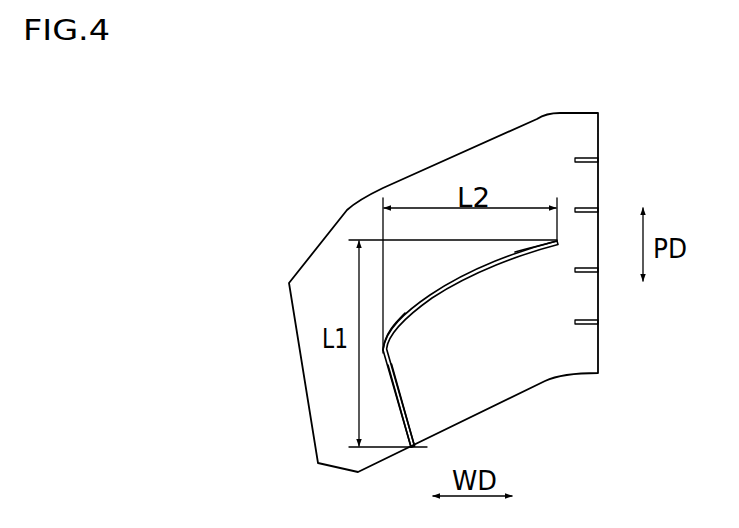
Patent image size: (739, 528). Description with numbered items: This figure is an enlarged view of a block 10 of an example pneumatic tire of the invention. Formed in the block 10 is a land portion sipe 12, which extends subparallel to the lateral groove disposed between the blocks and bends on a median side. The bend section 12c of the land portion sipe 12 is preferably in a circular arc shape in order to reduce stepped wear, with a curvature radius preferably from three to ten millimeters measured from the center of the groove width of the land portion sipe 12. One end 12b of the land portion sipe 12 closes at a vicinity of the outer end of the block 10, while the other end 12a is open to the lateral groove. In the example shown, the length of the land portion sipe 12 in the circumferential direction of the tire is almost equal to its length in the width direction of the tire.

The block 10 is at (332, 205).
The land portion sipe 12 is at (468, 282).
The other end of the land portion sipe 12a is at (416, 442).
The one end of the land portion sipe 12b is at (562, 244).
The bend section 12c is at (391, 341).